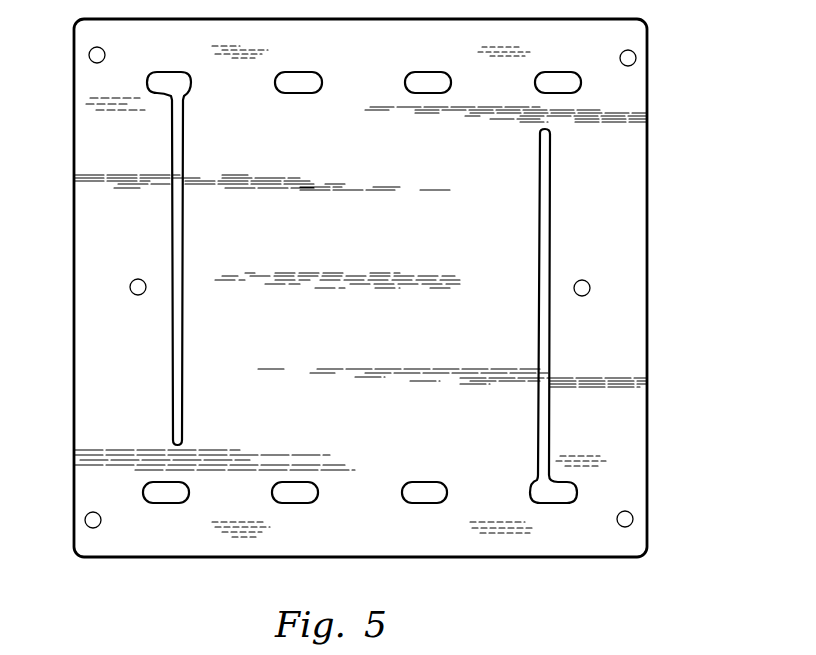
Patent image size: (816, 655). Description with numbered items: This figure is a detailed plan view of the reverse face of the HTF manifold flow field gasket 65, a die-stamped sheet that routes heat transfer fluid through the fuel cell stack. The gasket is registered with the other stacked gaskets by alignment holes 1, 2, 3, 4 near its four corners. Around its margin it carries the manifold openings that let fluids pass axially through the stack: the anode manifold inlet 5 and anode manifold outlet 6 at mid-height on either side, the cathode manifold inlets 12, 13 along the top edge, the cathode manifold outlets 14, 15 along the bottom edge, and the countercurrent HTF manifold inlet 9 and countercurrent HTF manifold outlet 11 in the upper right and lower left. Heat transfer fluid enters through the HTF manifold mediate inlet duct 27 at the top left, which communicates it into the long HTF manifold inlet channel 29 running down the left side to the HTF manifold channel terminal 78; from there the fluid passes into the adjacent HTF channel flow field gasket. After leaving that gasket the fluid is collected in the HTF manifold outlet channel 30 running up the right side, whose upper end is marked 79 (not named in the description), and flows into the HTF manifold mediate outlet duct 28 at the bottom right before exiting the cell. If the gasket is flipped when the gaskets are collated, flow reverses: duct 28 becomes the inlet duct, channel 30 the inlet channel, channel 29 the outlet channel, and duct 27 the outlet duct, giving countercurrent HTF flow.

The HTF manifold flow field gasket 65 is at (690, 220).
The alignment hole 1 is at (100, 56).
The alignment hole 2 is at (628, 60).
The alignment hole 3 is at (630, 521).
The alignment hole 4 is at (96, 520).
The anode manifold inlet 5 is at (135, 290).
The anode manifold outlet 6 is at (578, 288).
The countercurrent HTF manifold inlet 9 is at (558, 78).
The countercurrent HTF manifold outlet 11 is at (168, 496).
The cathode manifold inlet 12 is at (298, 78).
The cathode manifold inlet 13 is at (428, 78).
The cathode manifold outlet 14 is at (428, 496).
The cathode manifold outlet 15 is at (298, 496).
The HTF manifold mediate inlet duct 27 is at (168, 78).
The HTF manifold mediate outlet duct 28 is at (558, 496).
The HTF manifold inlet channel 29 is at (176, 166).
The HTF manifold outlet channel 30 is at (538, 434).
The HTF manifold channel terminal 78 is at (172, 440).
The channel end 79 is at (552, 136).